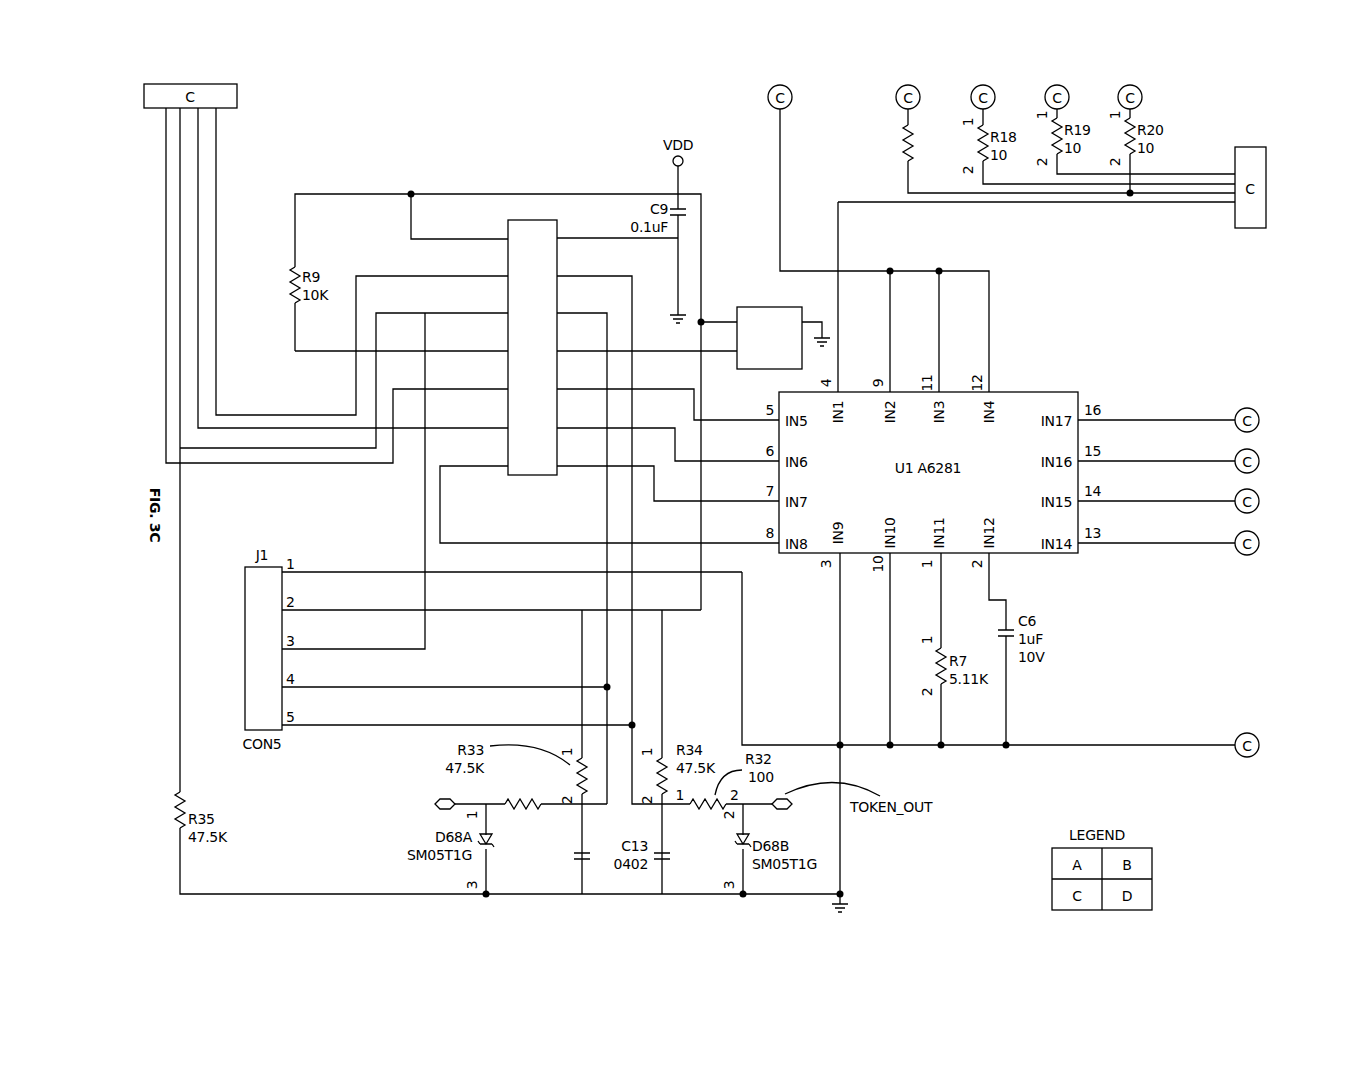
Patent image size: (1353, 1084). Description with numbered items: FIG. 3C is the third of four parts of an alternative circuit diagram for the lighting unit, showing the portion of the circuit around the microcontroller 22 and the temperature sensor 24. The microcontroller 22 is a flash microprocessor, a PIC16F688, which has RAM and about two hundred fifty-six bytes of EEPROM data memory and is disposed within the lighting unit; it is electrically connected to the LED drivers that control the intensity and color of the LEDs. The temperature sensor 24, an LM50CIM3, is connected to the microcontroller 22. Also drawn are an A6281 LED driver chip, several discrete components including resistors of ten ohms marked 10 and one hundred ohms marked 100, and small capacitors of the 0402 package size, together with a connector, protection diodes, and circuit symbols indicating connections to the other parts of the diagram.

The microcontroller 22 is at (536, 347).
The temperature sensor 24 is at (765, 309).
The resistor R17 10 ohm 10 is at (1060, 139).
The resistor R31 100 ohm 100 is at (521, 786).
The capacitor C11 0402 is at (562, 855).